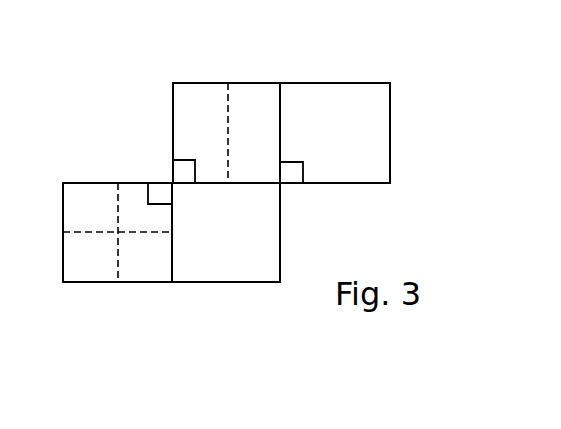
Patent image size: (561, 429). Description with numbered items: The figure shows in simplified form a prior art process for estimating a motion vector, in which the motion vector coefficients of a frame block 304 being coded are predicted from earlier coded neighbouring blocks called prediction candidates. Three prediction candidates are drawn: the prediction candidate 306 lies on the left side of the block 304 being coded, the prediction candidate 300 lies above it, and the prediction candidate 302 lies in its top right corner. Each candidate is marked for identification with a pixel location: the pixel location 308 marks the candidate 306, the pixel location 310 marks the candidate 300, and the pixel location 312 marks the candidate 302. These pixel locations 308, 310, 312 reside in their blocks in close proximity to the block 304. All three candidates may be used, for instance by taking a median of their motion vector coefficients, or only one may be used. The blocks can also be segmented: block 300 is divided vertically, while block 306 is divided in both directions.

The prediction candidate 300 is at (222, 83).
The prediction candidate 302 is at (390, 120).
The frame block being coded 304 is at (205, 282).
The prediction candidate 306 is at (102, 282).
The pixel location 308 is at (158, 193).
The pixel location 310 is at (178, 168).
The pixel location 312 is at (288, 175).